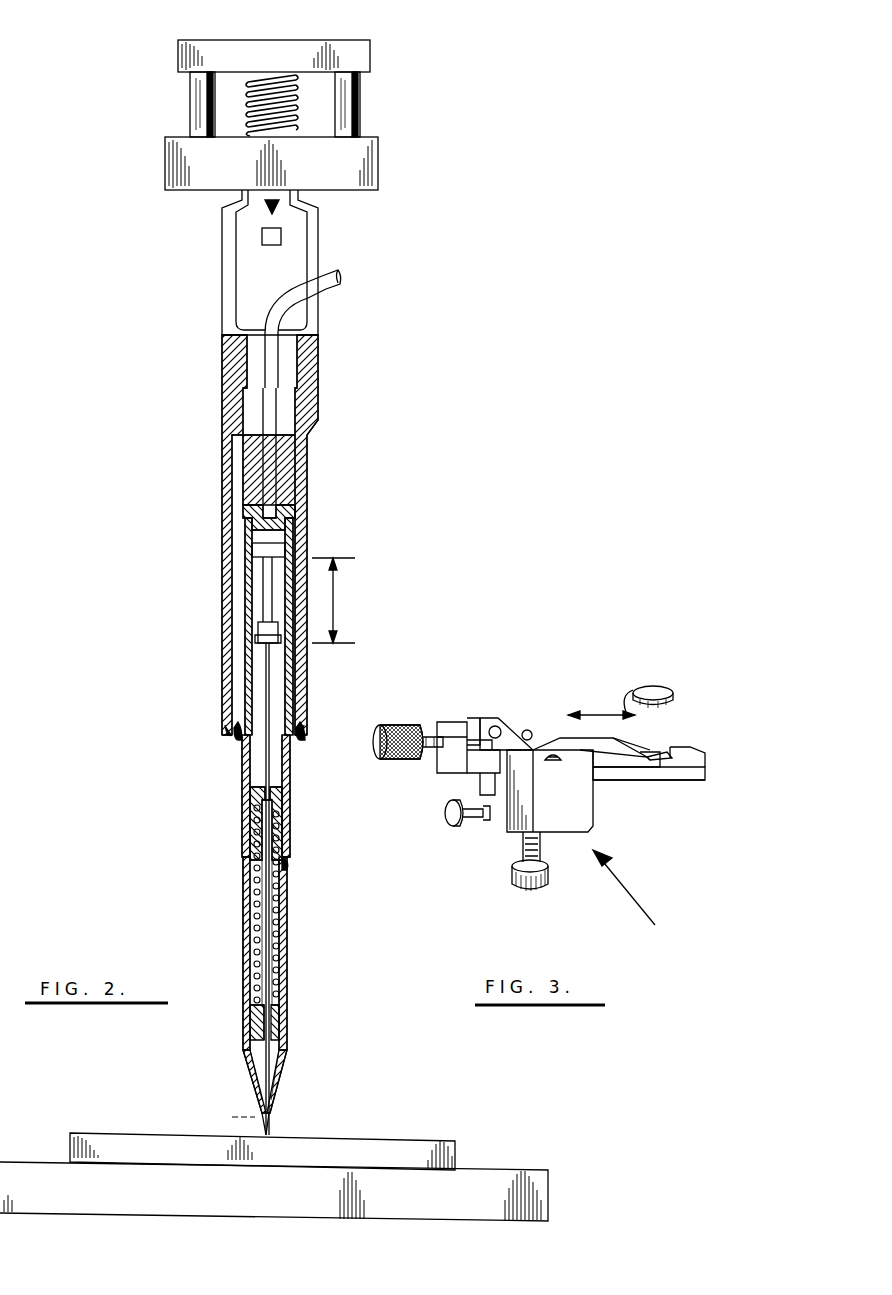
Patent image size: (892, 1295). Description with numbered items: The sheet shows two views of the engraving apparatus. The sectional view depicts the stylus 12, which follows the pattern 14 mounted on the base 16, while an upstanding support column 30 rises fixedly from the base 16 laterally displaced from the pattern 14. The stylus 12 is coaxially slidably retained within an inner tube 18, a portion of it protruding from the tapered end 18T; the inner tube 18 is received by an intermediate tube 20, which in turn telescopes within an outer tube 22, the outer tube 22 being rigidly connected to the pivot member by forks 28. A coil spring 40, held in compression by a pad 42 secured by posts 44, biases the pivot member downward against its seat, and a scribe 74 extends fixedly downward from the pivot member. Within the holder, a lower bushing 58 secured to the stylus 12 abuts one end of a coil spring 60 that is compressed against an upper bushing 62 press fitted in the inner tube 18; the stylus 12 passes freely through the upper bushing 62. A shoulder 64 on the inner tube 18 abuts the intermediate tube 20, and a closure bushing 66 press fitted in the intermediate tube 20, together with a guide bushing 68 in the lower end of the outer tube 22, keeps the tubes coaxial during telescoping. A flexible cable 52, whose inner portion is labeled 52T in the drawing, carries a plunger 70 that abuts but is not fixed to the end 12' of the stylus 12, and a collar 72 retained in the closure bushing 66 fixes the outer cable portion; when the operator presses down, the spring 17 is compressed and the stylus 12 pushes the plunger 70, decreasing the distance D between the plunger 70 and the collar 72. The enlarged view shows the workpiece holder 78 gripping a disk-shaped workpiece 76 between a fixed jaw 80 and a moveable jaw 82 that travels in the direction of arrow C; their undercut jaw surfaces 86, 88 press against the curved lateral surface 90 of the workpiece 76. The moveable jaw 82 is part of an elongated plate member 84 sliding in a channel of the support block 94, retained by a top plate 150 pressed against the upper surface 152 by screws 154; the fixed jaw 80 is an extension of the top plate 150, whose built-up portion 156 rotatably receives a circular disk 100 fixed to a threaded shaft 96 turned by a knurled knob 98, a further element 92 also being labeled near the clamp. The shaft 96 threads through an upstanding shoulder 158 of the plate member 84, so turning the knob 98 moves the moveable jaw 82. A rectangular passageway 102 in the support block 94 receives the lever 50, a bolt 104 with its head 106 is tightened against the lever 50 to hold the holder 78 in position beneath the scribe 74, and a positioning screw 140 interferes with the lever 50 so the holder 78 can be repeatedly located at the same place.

In FIG. 2, the stylus 12 is at (321, 1070).
In FIG. 2, the end of stylus 12' is at (227, 824).
In FIG. 2, the pattern 14 is at (390, 1138).
In FIG. 2, the base 16 is at (496, 1184).
In FIG. 2, the spring 17 is at (276, 935).
In FIG. 2, the inner tube 18 is at (287, 970).
In FIG. 2, the tapered end of inner tube 18T is at (280, 1075).
In FIG. 2, the intermediate tube 20 is at (290, 828).
In FIG. 2, the outer tube 22 is at (308, 480).
In FIG. 2, the forks 28 is at (236, 255).
In FIG. 2, the support column 30 is at (378, 165).
In FIG. 2, the coil spring 40 is at (300, 100).
In FIG. 2, the pad 42 is at (343, 44).
In FIG. 2, the posts 44 is at (190, 112).
In FIG. 2, the lever 50 is at (268, 245).
In FIG. 2, the flexible cable 52 is at (263, 458).
In FIG. 2, the plunger rod lower end 52T is at (263, 590).
In FIG. 2, the lower bushing 58 is at (280, 1012).
In FIG. 2, the coil spring 60 is at (287, 904).
In FIG. 2, the upper bushing 62 is at (290, 780).
In FIG. 2, the shoulder 64 is at (290, 864).
In FIG. 2, the closure bushing 66 is at (243, 512).
In FIG. 2, the guide bushing 68 is at (300, 740).
In FIG. 2, the plunger 70 is at (258, 640).
In FIG. 2, the collar 72 is at (260, 550).
In FIG. 2, the scribe 74 is at (262, 207).
In FIG. 2, the distance D is at (333, 600).
In FIG. 3, the workpiece 76 is at (660, 690).
In FIG. 3, the workpiece holder 78 is at (637, 901).
In FIG. 3, the fixed jaw 80 is at (605, 765).
In FIG. 3, the moveable jaw 82 is at (690, 748).
In FIG. 3, the plate member 84 is at (688, 778).
In FIG. 3, the undercut jaw surface 86 is at (645, 752).
In FIG. 3, the undercut jaw surface 88 is at (668, 750).
In FIG. 3, the curved lateral surface 90 is at (633, 690).
In FIG. 3, the clamp block 92 is at (492, 723).
In FIG. 3, the support block 94 is at (562, 815).
In FIG. 3, the threaded shaft 96 is at (477, 740).
In FIG. 3, the knurled knob 98 is at (396, 725).
In FIG. 3, the circular disk 100 is at (500, 726).
In FIG. 3, the passageway 102 is at (486, 817).
In FIG. 3, the bolt 104 is at (523, 848).
In FIG. 3, the thumb wheel 106 is at (535, 890).
In FIG. 3, the double-ended arrow C is at (604, 712).
In FIG. 3, the positioning screw 140 is at (446, 818).
In FIG. 3, the top plate 150 is at (556, 756).
In FIG. 3, the upper surface 152 is at (472, 762).
In FIG. 3, the screws 154 is at (530, 730).
In FIG. 3, the built-up portion 156 is at (480, 733).
In FIG. 3, the upstanding shoulder 158 is at (440, 760).